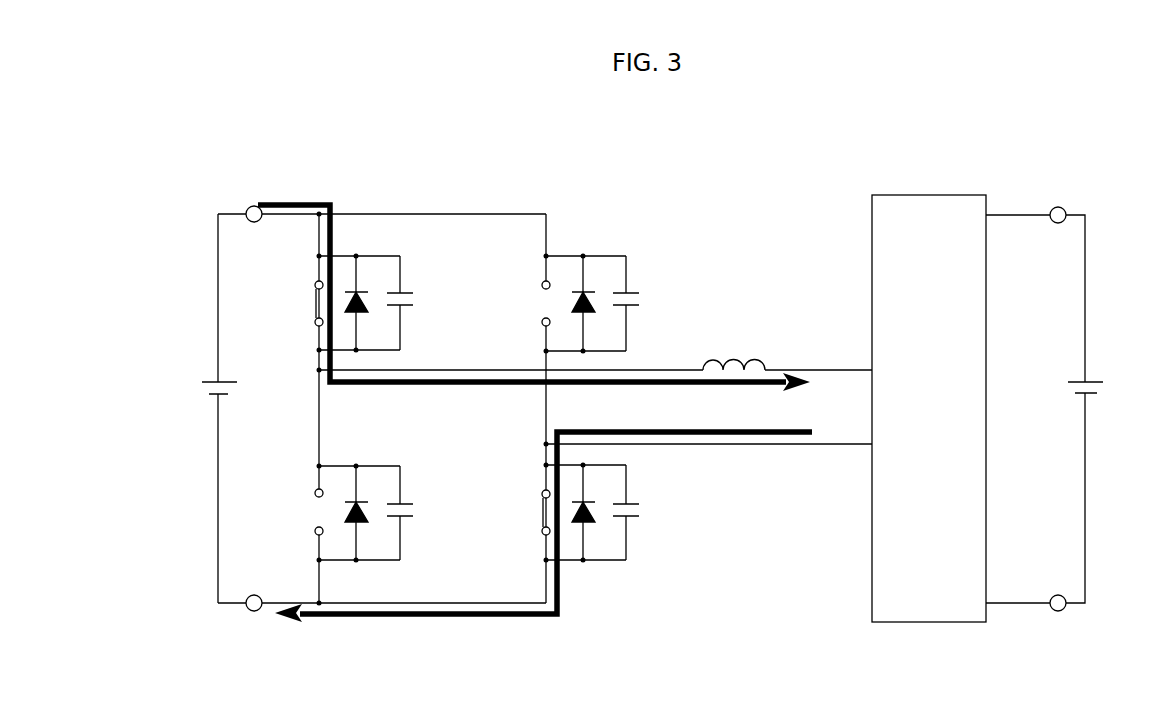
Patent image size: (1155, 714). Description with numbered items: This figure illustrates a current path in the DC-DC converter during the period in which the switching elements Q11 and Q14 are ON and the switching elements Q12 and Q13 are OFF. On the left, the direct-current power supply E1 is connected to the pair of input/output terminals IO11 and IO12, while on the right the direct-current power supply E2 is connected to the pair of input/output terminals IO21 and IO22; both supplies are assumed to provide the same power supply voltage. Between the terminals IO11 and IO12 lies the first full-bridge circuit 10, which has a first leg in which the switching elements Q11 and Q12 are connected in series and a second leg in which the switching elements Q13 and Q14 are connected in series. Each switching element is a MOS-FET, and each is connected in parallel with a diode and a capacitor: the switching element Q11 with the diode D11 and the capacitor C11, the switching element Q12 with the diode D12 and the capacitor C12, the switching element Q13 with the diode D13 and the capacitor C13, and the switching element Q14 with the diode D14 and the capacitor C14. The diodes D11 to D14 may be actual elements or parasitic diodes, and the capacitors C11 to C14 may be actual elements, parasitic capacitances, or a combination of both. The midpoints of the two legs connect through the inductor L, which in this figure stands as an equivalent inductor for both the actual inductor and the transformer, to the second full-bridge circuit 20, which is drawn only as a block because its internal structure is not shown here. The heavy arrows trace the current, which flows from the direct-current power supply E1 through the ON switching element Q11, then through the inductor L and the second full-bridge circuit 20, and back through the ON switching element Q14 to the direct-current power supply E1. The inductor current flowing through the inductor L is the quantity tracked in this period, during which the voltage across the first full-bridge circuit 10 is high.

The first full-bridge circuit 10 is at (444, 168).
The second full-bridge circuit 20 is at (938, 195).
The input/output terminal IO11 is at (249, 197).
The input/output terminal IO12 is at (249, 619).
The input/output terminal IO21 is at (1059, 199).
The input/output terminal IO22 is at (1059, 619).
The direct-current power supply E1 is at (208, 373).
The direct-current power supply E2 is at (1094, 373).
The switching element Q11 is at (289, 301).
The switching element Q12 is at (289, 512).
The switching element Q13 is at (520, 303).
The switching element Q14 is at (518, 517).
The diode D11 is at (372, 287).
The diode D12 is at (364, 494).
The diode D13 is at (599, 291).
The diode D14 is at (599, 532).
The capacitor C11 is at (420, 303).
The capacitor C12 is at (423, 513).
The capacitor C13 is at (644, 303).
The capacitor C14 is at (644, 512).
The inductor L is at (734, 351).